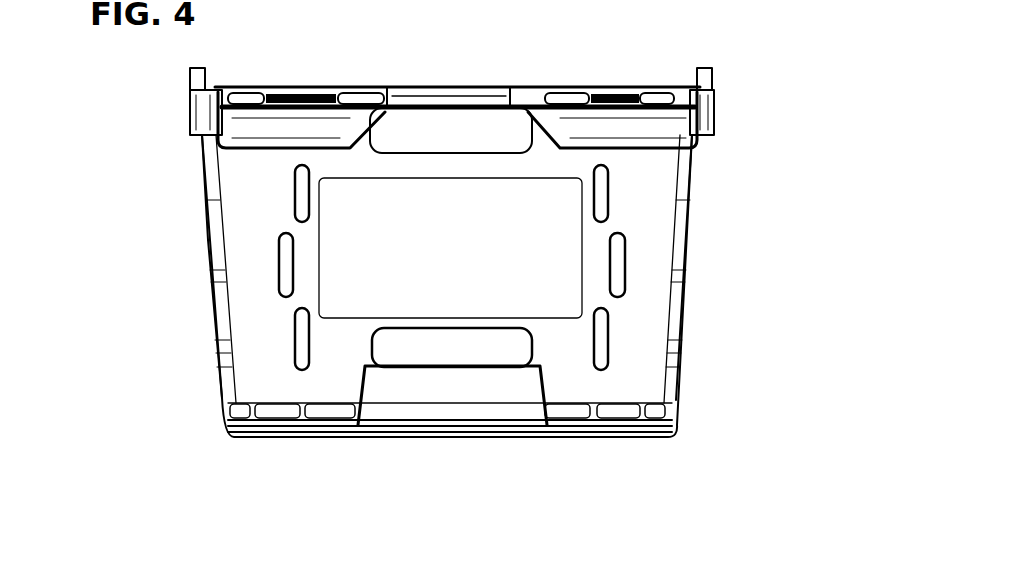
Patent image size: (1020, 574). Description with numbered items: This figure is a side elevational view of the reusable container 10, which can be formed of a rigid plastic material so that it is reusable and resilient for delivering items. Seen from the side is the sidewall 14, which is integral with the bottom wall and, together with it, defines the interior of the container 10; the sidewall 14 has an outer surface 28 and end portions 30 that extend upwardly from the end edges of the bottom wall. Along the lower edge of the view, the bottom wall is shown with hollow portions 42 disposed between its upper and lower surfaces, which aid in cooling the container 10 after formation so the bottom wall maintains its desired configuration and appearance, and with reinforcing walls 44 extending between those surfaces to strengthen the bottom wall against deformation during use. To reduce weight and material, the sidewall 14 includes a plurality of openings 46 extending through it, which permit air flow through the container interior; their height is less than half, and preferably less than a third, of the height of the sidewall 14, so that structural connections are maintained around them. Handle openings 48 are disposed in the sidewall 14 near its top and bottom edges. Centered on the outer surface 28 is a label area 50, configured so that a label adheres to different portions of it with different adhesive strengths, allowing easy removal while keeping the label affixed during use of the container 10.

The reusable container 10 is at (757, 77).
The sidewall portion 14 is at (245, 303).
The outer surface 28 is at (238, 212).
The end portions 30 is at (660, 185).
The hollow portions 42 is at (325, 415).
The reinforcing walls 44 is at (597, 410).
The openings 46 is at (622, 268).
The handle openings 48 is at (468, 152).
The label area 50 is at (550, 298).